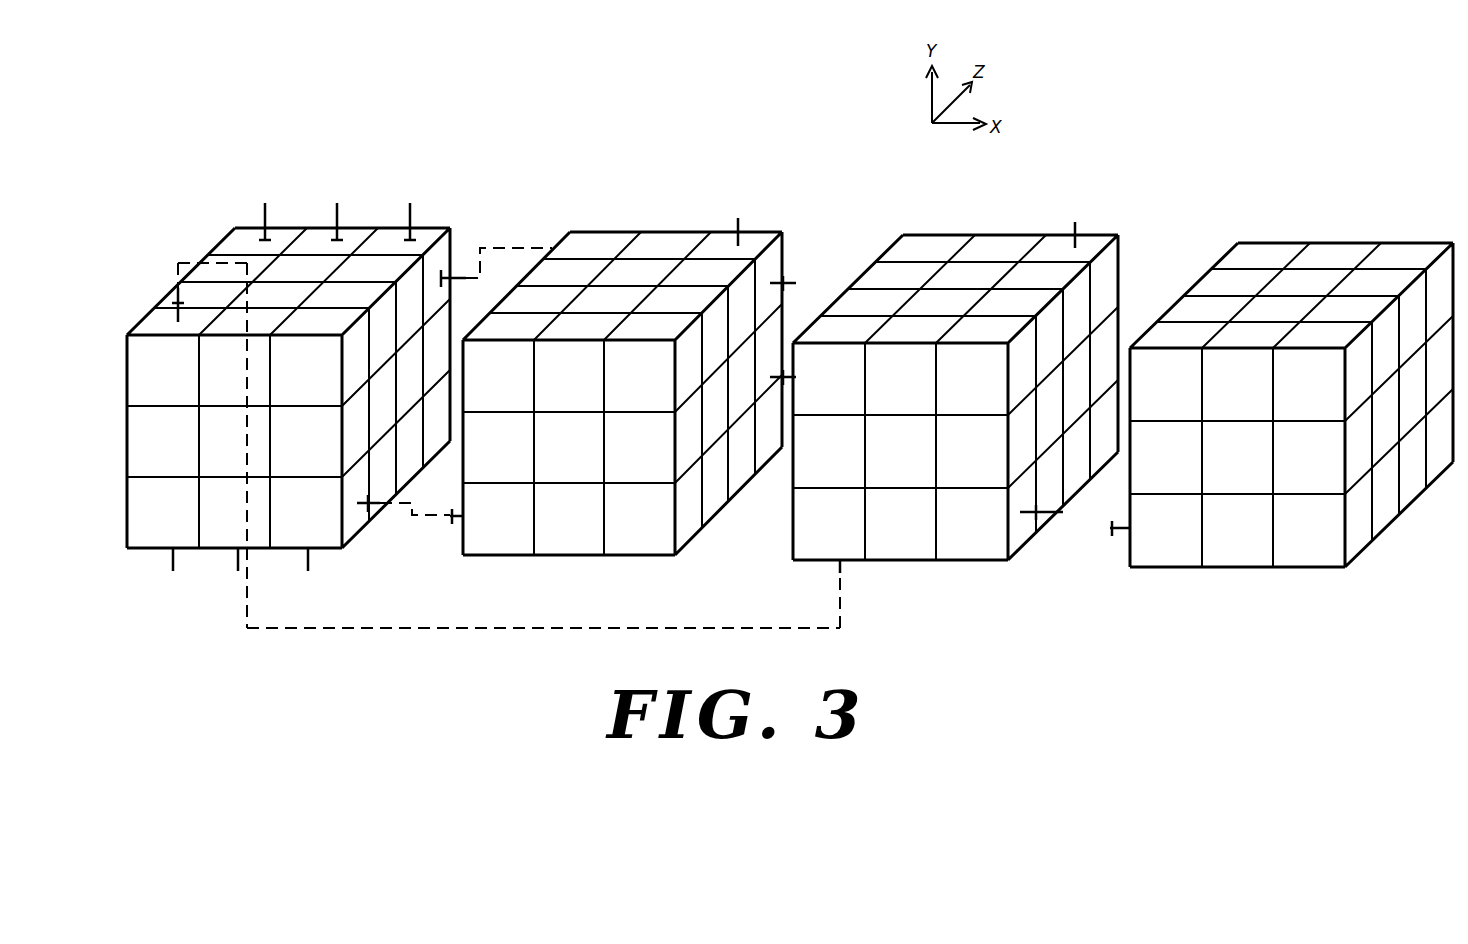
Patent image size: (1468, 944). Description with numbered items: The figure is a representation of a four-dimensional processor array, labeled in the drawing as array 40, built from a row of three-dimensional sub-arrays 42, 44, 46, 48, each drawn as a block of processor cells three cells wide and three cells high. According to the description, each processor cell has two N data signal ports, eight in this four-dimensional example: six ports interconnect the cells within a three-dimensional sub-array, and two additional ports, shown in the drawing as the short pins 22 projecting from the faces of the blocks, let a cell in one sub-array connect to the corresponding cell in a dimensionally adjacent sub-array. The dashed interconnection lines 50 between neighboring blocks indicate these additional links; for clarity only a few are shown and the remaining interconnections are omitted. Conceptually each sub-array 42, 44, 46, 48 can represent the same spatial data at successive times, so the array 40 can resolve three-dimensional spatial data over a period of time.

The array of memory modules 40 is at (224, 118).
The first module (cube) 42 is at (301, 216).
The second module (cube) 44 is at (616, 225).
The third module (cube) 46 is at (932, 224).
The fourth module (cube) 48 is at (1265, 228).
The connector pins 22 is at (262, 214).
The interconnection lines 50 is at (510, 246).